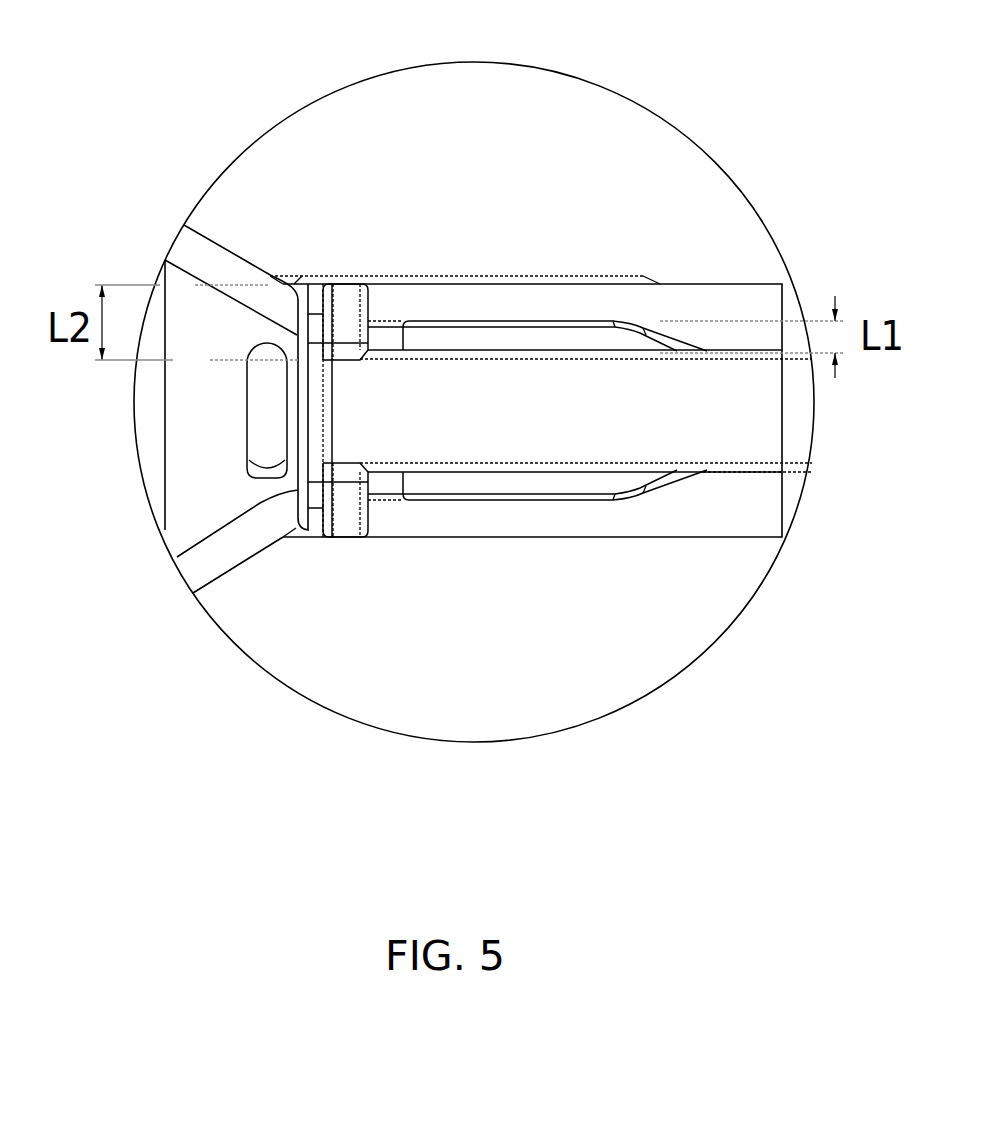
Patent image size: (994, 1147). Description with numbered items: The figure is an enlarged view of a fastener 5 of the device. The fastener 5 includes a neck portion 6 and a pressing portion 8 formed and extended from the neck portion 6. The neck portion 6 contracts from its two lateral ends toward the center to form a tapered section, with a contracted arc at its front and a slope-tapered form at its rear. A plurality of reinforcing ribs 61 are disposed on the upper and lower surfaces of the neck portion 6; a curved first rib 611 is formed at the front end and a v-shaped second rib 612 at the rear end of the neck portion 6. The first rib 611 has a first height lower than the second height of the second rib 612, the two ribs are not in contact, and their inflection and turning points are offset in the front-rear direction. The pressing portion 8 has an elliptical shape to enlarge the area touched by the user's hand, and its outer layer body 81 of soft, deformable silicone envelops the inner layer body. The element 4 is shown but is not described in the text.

The housing 4 is at (680, 272).
The opening 5 is at (742, 500).
The shaft 6 is at (488, 428).
The elastic arm 61 is at (472, 277).
The first arm section 611 is at (527, 340).
The second arm section 612 is at (343, 305).
The bracket 8 is at (180, 489).
The slot 81 is at (197, 432).